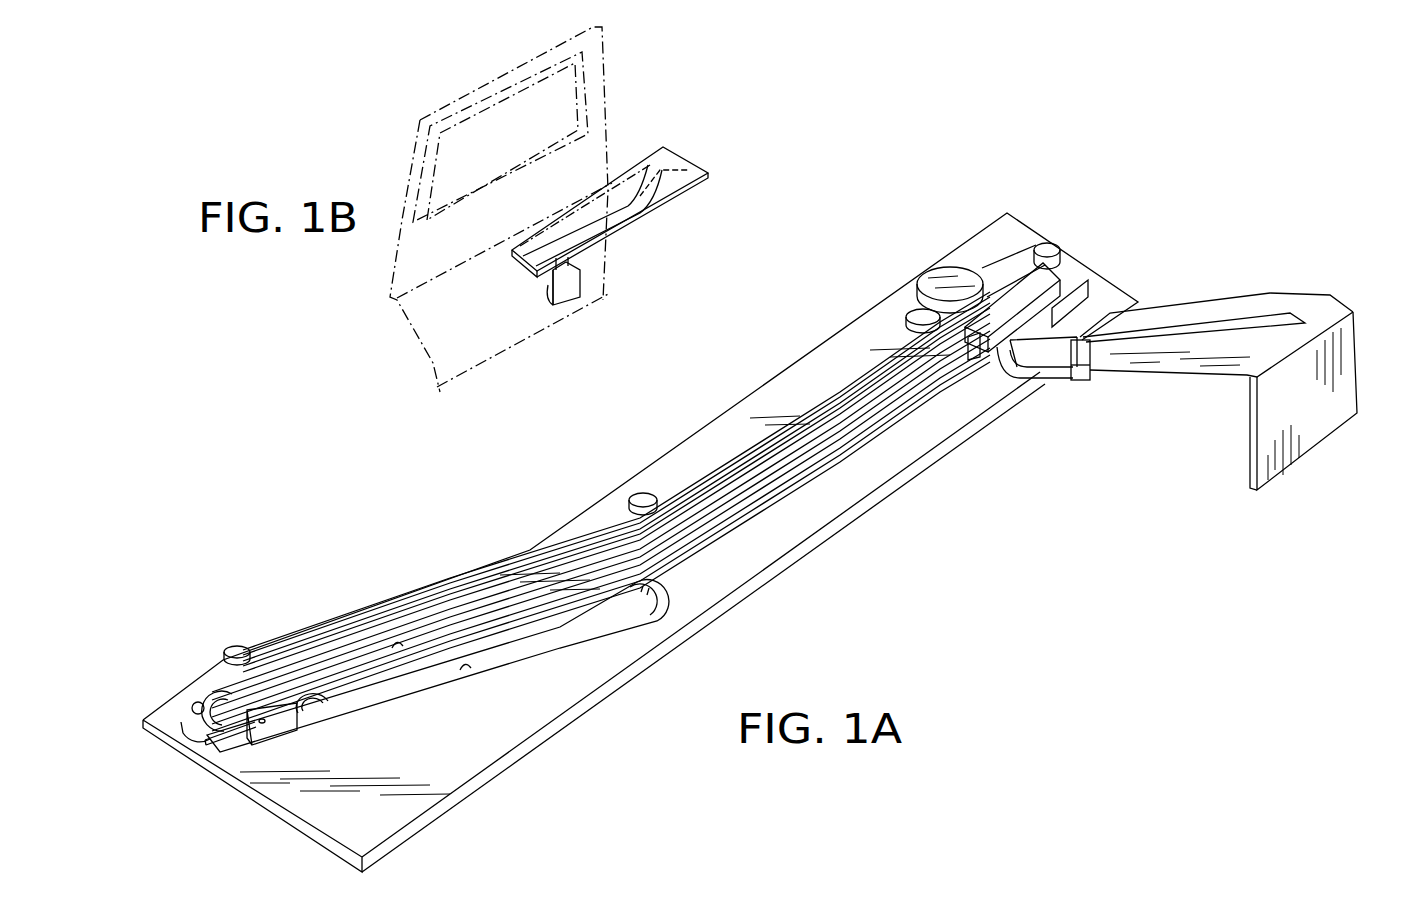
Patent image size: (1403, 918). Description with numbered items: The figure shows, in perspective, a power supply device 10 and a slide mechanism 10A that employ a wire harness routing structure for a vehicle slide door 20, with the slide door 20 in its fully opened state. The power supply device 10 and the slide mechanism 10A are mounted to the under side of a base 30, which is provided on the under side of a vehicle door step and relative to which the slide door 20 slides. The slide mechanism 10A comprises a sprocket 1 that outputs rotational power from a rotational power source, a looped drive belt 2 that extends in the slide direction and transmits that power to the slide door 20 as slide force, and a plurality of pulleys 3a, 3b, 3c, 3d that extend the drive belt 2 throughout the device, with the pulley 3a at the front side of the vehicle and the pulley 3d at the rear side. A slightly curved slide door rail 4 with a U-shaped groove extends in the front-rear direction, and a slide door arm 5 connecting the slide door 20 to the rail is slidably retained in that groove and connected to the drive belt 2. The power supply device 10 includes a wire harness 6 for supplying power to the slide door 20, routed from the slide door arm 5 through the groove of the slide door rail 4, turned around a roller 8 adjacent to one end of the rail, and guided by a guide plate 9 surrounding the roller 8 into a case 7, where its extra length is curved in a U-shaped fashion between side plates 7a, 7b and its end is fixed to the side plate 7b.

In FIG. 1A, the sprocket 1 is at (942, 272).
In FIG. 1A, the drive belt 2 is at (758, 450).
In FIG. 1A, the pulley 3a is at (235, 647).
In FIG. 1A, the pulley 3b is at (640, 494).
In FIG. 1A, the pulley 3c is at (920, 317).
In FIG. 1A, the pulley 3d is at (1047, 249).
In FIG. 1A, the slide door rail 4 is at (601, 522).
In FIG. 1B, the slide door arm 5 is at (573, 288).
In FIG. 1A, the slide door arm 5 is at (1163, 360).
In FIG. 1A, the wire harness 6 is at (790, 500).
In FIG. 1A, the case 7 is at (455, 691).
In FIG. 1A, the side plate 7a is at (398, 646).
In FIG. 1A, the side plate 7b is at (466, 668).
In FIG. 1A, the roller 8 is at (190, 697).
In FIG. 1A, the guide plate 9 is at (185, 730).
In FIG. 1B, the power supply device 10 is at (649, 234).
In FIG. 1A, the power supply device 10 is at (747, 536).
In FIG. 1B, the slide mechanism 10A is at (649, 234).
In FIG. 1A, the slide mechanism 10A is at (747, 536).
In FIG. 1B, the slide door 20 is at (610, 117).
In FIG. 1B, the base 30 is at (664, 150).
In FIG. 1A, the base 30 is at (527, 680).